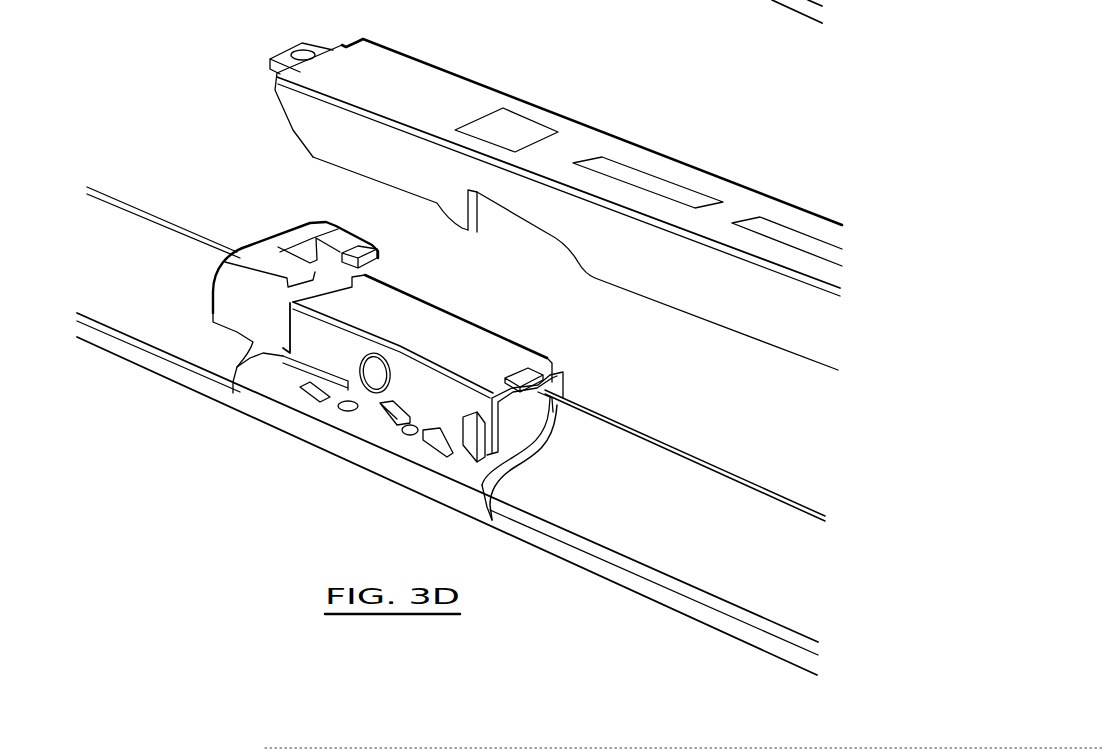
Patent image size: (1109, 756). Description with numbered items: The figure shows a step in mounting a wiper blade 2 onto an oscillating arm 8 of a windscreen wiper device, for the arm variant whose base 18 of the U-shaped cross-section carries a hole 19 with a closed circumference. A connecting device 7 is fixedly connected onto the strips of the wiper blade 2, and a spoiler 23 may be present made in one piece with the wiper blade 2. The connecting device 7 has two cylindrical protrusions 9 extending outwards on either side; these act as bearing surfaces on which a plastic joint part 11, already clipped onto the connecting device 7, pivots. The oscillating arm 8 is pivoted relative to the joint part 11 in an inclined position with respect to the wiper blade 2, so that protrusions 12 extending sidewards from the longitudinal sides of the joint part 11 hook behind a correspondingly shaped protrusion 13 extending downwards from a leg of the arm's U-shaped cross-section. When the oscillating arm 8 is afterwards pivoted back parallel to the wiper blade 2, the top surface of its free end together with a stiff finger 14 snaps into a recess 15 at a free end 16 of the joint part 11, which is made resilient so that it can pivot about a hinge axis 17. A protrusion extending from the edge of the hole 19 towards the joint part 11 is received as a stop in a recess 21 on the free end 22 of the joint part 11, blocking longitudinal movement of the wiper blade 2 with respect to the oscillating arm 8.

The wiper blade 2 is at (612, 568).
The connecting device 7 is at (316, 441).
The oscillating arm 8 is at (662, 170).
The cylindrical protrusions 9 is at (375, 380).
The joint part 11 is at (430, 323).
The protrusions 12 is at (575, 401).
The protrusion 13 is at (462, 215).
The stiff finger 14 is at (290, 50).
The recess 15 is at (313, 250).
The free end 16 is at (262, 250).
The hinge axis 17 is at (283, 357).
The base 18 is at (432, 88).
The hole 19 is at (517, 132).
The recess 21 is at (520, 378).
The free end 22 is at (567, 374).
The spoiler 23 is at (718, 486).